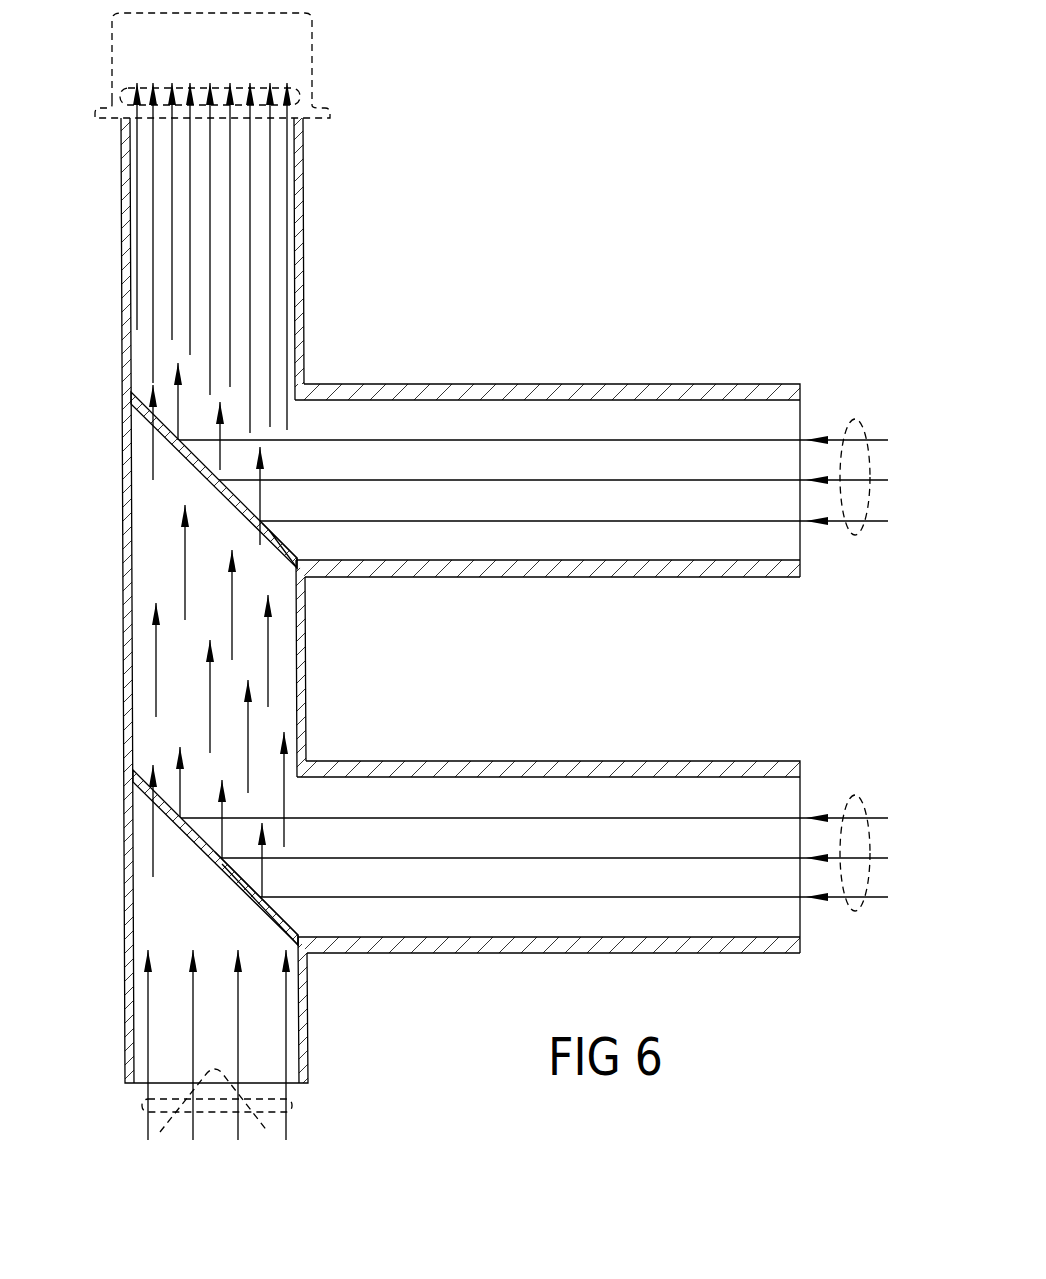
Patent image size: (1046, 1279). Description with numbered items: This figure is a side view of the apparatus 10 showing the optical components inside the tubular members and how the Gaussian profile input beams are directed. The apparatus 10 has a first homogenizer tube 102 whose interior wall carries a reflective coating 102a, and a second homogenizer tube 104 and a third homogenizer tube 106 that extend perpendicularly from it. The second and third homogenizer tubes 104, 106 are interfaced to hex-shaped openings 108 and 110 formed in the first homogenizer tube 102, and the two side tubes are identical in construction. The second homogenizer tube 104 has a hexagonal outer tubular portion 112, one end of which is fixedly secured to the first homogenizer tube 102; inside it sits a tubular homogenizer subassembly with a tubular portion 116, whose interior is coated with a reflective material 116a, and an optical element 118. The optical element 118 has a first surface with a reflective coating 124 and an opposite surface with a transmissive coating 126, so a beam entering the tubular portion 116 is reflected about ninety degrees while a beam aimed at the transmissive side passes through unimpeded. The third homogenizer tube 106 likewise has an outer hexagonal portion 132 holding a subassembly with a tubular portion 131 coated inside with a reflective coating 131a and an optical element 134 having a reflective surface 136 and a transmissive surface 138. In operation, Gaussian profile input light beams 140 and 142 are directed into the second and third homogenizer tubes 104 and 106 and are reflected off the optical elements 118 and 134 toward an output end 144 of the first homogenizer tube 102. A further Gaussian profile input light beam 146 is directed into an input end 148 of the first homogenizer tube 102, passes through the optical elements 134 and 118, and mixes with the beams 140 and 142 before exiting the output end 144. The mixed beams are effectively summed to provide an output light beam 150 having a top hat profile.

The apparatus 10 is at (536, 106).
The first homogenizer tube 102 is at (115, 882).
The reflective coating 102a is at (135, 560).
The second homogenizer tube 104 is at (555, 378).
The third homogenizer tube 106 is at (560, 752).
The hex-shaped opening 108 is at (303, 400).
The hex-shaped opening 110 is at (300, 776).
The outer tubular portion 112 is at (637, 384).
The tubular portion 116 is at (603, 568).
The reflective material 116a is at (788, 558).
The optical element 118 is at (138, 395).
The reflective coating 124 is at (290, 560).
The transmissive coating 126 is at (290, 545).
The tubular portion 131 is at (611, 953).
The reflective coating 131a is at (788, 937).
The outer tubular hexagonally shaped portion 132 is at (543, 992).
The optical element 134 is at (140, 772).
The reflective surface 136 is at (290, 920).
The transmissive surface 138 is at (245, 903).
The Gaussian profile input light beam 140 is at (855, 422).
The Gaussian profile input light beam 142 is at (855, 796).
The output end 144 is at (120, 146).
The Gaussian profile input light beam 146 is at (293, 1106).
The input end 148 is at (125, 1010).
The output light beam 150 is at (318, 50).